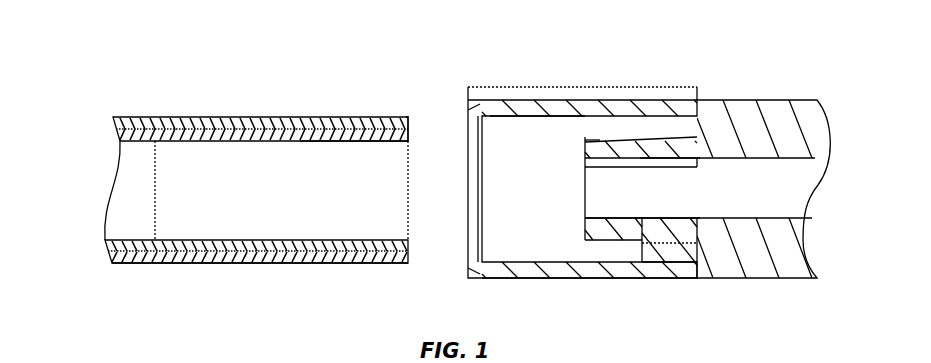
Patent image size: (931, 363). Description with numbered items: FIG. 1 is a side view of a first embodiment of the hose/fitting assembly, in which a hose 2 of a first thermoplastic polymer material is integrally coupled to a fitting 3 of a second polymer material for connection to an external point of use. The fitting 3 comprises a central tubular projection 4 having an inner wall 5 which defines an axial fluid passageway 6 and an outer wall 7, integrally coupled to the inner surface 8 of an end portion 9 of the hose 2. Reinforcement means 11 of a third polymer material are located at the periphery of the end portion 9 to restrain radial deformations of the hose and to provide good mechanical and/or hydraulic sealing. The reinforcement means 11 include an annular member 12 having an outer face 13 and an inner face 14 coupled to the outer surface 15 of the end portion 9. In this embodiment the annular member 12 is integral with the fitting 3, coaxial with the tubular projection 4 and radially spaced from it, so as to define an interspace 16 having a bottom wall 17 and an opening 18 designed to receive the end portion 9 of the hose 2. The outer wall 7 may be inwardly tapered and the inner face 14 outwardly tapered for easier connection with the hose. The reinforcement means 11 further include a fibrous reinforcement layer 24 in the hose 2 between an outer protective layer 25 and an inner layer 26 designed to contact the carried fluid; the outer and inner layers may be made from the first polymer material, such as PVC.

The hose 2 is at (110, 57).
The fitting 3 is at (807, 89).
The central tubular projection 4 is at (604, 229).
The inner wall 5 is at (606, 218).
The axial fluid passageway 6 is at (670, 188).
The outer wall 7 is at (605, 139).
The inner surface 8 is at (387, 141).
The end portion 9 is at (346, 102).
The reinforcement means 11 is at (580, 283).
The annular member 12 is at (523, 275).
The outer face 13 is at (497, 100).
The inner face 14 is at (533, 122).
The outer surface 15 is at (402, 117).
The interspace 16 is at (642, 139).
The bottom wall 17 is at (700, 255).
The opening 18 is at (594, 246).
The fibrous reinforcement layer 24 is at (201, 249).
The outer protective layer 25 is at (146, 262).
The inner layer 26 is at (261, 244).